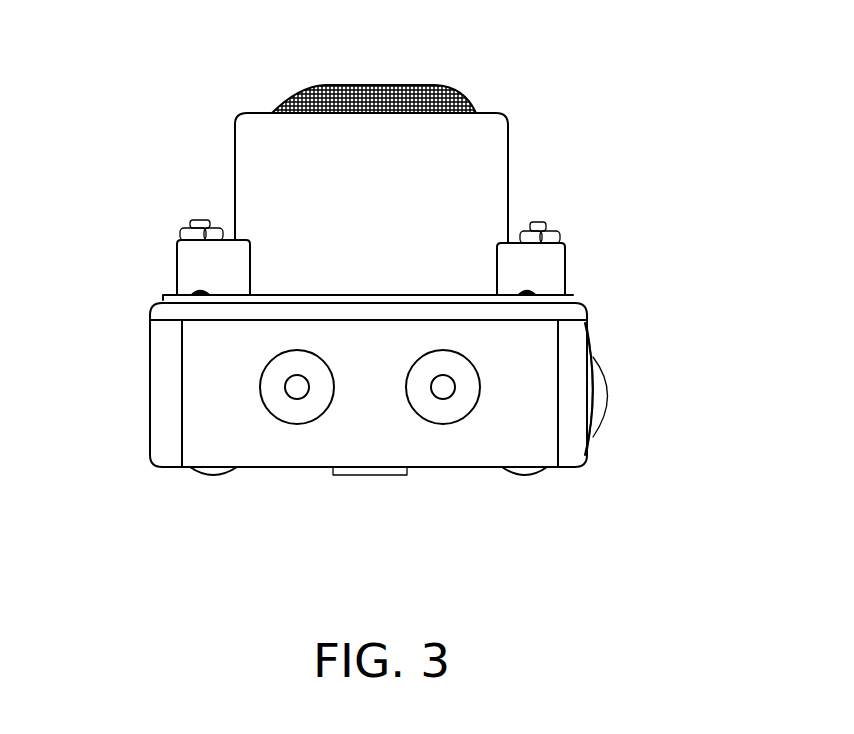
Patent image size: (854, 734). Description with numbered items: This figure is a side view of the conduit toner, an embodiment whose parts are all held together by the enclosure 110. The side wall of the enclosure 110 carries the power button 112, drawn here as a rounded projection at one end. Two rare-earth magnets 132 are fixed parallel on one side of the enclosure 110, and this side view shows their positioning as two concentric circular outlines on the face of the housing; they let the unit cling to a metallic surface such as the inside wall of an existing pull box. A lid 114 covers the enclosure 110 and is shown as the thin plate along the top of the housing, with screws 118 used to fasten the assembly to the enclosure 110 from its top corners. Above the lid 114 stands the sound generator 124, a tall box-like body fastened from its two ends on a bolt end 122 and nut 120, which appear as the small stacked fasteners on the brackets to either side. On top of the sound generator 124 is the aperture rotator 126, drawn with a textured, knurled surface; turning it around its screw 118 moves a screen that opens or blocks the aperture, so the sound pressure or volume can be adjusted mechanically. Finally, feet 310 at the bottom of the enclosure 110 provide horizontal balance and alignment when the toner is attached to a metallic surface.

The enclosure 110 is at (212, 380).
The power button 112 is at (605, 398).
The lid 114 is at (558, 313).
The screws 118 is at (200, 292).
The nut 120 is at (555, 228).
The bolt end 122 is at (542, 222).
The sound generator 124 is at (335, 160).
The aperture rotator 126 is at (350, 92).
The rare-earth magnets 132 is at (370, 470).
The feet 310 is at (525, 473).